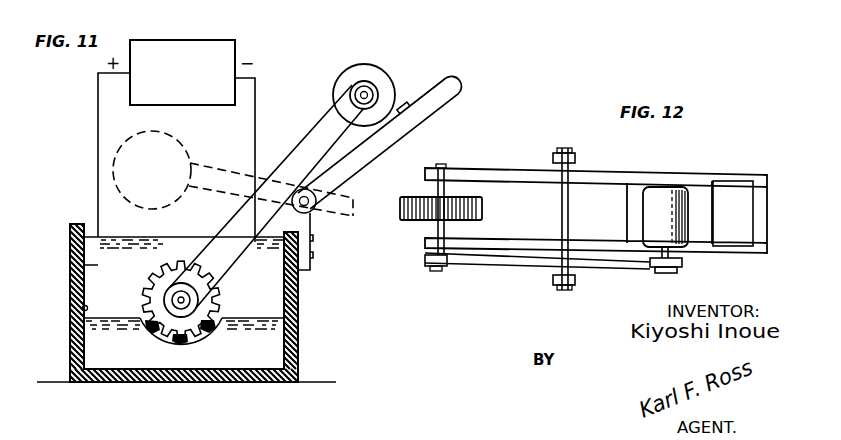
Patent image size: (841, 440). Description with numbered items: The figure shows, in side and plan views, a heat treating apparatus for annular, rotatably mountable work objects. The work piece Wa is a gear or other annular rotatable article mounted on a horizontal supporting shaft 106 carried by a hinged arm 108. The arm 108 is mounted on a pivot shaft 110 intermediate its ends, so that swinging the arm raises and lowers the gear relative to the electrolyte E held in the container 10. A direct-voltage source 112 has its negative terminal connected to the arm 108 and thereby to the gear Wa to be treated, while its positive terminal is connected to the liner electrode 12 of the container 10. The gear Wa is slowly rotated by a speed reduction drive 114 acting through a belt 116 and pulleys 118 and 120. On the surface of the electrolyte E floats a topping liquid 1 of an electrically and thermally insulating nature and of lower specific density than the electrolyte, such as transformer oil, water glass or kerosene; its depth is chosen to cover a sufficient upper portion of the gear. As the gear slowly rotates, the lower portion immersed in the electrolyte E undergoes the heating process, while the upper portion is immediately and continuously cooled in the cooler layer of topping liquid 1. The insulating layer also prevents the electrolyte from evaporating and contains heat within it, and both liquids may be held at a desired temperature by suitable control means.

In FIG. 11, the topping liquid 1 is at (270, 287).
In FIG. 11, the container 10 is at (299, 350).
In FIG. 11, the liner electrode 12 is at (82, 308).
In FIG. 11, the electrolyte E is at (270, 366).
In FIG. 11, the horizontal supporting shaft 106 is at (181, 303).
In FIG. 12, the horizontal supporting shaft 106 is at (444, 193).
In FIG. 11, the work piece Wa is at (203, 333).
In FIG. 12, the work piece Wa is at (484, 207).
In FIG. 11, the hinged arm 108 is at (366, 165).
In FIG. 12, the hinged arm 108 is at (614, 176).
In FIG. 11, the pivot shaft 110 is at (309, 208).
In FIG. 12, the pivot shaft 110 is at (569, 213).
In FIG. 11, the direct-voltage source 112 is at (200, 40).
In FIG. 11, the speed reduction drive 114 is at (380, 69).
In FIG. 12, the speed reduction drive 114 is at (677, 186).
In FIG. 11, the belt 116 is at (325, 115).
In FIG. 12, the belt 116 is at (508, 266).
In FIG. 11, the pulley 118 is at (181, 297).
In FIG. 12, the pulley 118 is at (447, 268).
In FIG. 11, the pulley 120 is at (376, 92).
In FIG. 12, the pulley 120 is at (677, 272).